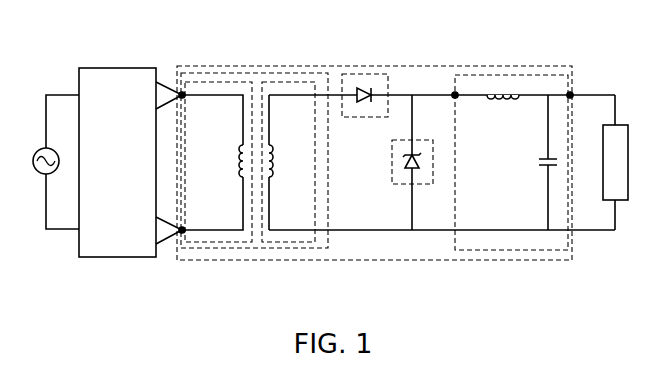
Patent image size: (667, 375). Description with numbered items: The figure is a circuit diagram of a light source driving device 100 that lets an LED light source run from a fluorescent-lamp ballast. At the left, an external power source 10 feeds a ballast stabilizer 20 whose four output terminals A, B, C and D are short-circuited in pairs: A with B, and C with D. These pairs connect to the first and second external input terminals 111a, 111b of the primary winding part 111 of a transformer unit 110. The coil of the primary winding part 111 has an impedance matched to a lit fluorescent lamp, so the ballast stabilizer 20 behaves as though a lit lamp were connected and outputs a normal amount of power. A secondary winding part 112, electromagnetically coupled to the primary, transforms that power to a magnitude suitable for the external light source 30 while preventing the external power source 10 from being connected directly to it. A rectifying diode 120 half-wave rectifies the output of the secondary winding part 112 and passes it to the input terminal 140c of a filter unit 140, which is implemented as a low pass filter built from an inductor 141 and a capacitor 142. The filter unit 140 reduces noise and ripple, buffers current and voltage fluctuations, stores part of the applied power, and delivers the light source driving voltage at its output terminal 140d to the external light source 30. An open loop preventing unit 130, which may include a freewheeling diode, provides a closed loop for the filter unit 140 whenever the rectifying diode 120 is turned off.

The external power source 10 is at (40, 150).
The ballast stabilizer 20 is at (103, 68).
The external light source 30 is at (616, 205).
The light source driving device 100 is at (560, 66).
The transformer unit 110 is at (262, 73).
The primary winding part 111 is at (199, 163).
The first external input terminal 111a is at (180, 92).
The second external input terminal 111b is at (181, 233).
The secondary winding part 112 is at (305, 82).
The rectifying diode 120 is at (368, 74).
The open loop preventing unit 130 is at (392, 163).
The filter unit 140 is at (518, 75).
The input terminal 140c is at (455, 92).
The output terminal 140d is at (572, 92).
The inductor 141 is at (505, 100).
The capacitor 142 is at (538, 163).